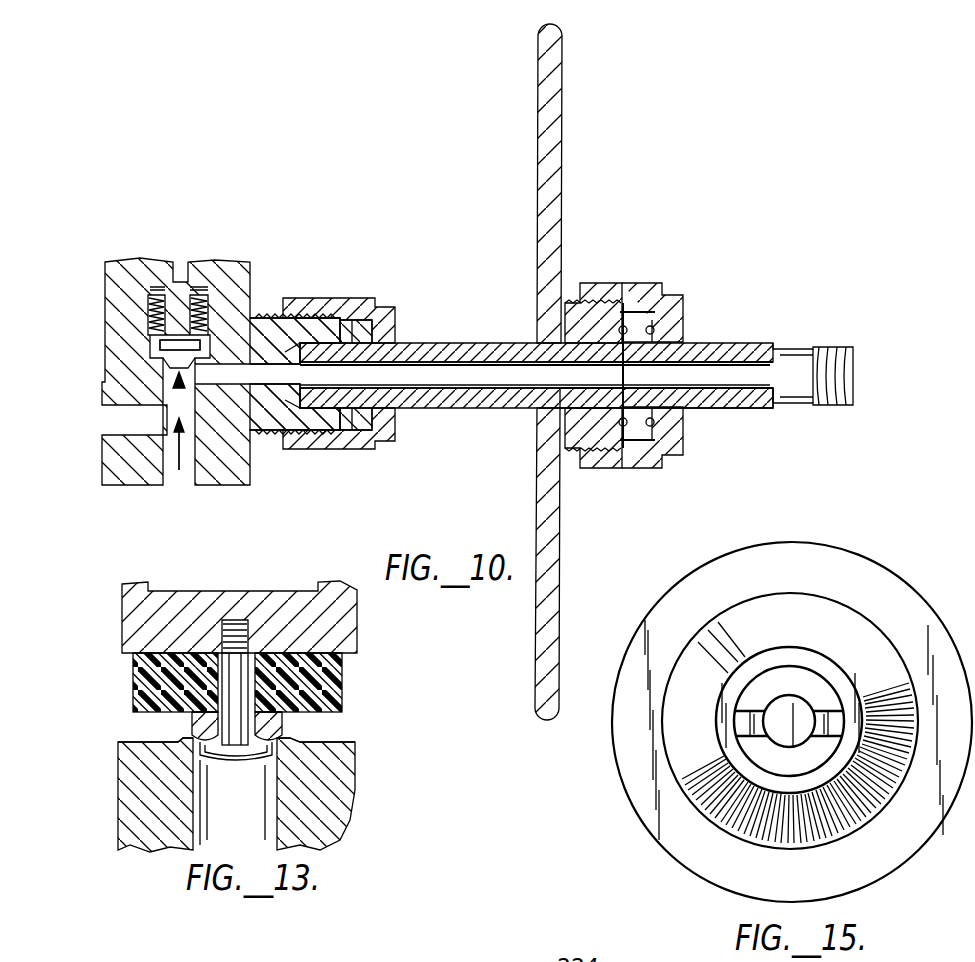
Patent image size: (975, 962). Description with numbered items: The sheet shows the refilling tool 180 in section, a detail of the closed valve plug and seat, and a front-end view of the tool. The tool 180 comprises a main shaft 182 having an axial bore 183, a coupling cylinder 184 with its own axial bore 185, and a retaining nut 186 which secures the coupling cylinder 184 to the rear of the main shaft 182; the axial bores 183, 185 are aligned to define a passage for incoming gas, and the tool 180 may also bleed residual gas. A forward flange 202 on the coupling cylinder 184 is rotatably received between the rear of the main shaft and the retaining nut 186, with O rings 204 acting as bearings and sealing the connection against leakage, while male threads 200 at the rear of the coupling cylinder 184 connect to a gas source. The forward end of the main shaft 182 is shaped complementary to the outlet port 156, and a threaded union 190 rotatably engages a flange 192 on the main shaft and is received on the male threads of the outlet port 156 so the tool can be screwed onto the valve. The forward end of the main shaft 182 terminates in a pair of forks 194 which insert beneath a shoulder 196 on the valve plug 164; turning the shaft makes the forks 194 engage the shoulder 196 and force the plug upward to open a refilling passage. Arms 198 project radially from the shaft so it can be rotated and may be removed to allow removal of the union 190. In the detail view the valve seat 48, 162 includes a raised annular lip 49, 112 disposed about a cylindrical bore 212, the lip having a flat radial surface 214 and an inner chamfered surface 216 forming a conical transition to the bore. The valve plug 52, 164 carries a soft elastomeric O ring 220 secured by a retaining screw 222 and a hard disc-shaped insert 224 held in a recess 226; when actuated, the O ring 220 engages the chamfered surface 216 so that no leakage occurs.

In FIG. 10, the arms 198 is at (551, 135).
In FIG. 10, the valve plug 164 is at (176, 350).
In FIG. 13, the valve plug 164 is at (330, 624).
In FIG. 10, the shoulder 196 is at (212, 345).
In FIG. 10, the forks 194 is at (248, 450).
In FIG. 15, the forks 194 is at (822, 718).
In FIG. 10, the outlet port 156 is at (300, 448).
In FIG. 10, the threaded union 190 is at (320, 298).
In FIG. 10, the flange 192 is at (372, 425).
In FIG. 15, the flange 192 is at (868, 578).
In FIG. 10, the main shaft 182 is at (462, 396).
In FIG. 10, the axial bore 183 is at (432, 372).
In FIG. 10, the coupling cylinder 184 is at (716, 408).
In FIG. 10, the axial bore 185 is at (712, 371).
In FIG. 10, the threaded end 200 is at (853, 368).
In FIG. 10, the tool 180 is at (655, 354).
In FIG. 10, the forward flange 202 is at (648, 465).
In FIG. 10, the retaining nut 186 is at (660, 294).
In FIG. 10, the O rings 204 is at (622, 325).
In FIG. 13, the valve plug 52 is at (283, 617).
In FIG. 13, the retaining screw 222 is at (233, 620).
In FIG. 13, the disc-shaped insert 224 is at (165, 680).
In FIG. 13, the recess 226 is at (170, 652).
In FIG. 13, the chamfered surface 216 is at (280, 754).
In FIG. 13, the radial surface 214 is at (300, 725).
In FIG. 13, the valve seat 48 is at (275, 795).
In FIG. 13, the valve seat 162 is at (252, 800).
In FIG. 13, the annular lip 49 is at (203, 725).
In FIG. 13, the annular lip 112 is at (175, 733).
In FIG. 13, the O ring 220 is at (195, 742).
In FIG. 13, the cylindrical bore 212 is at (228, 812).